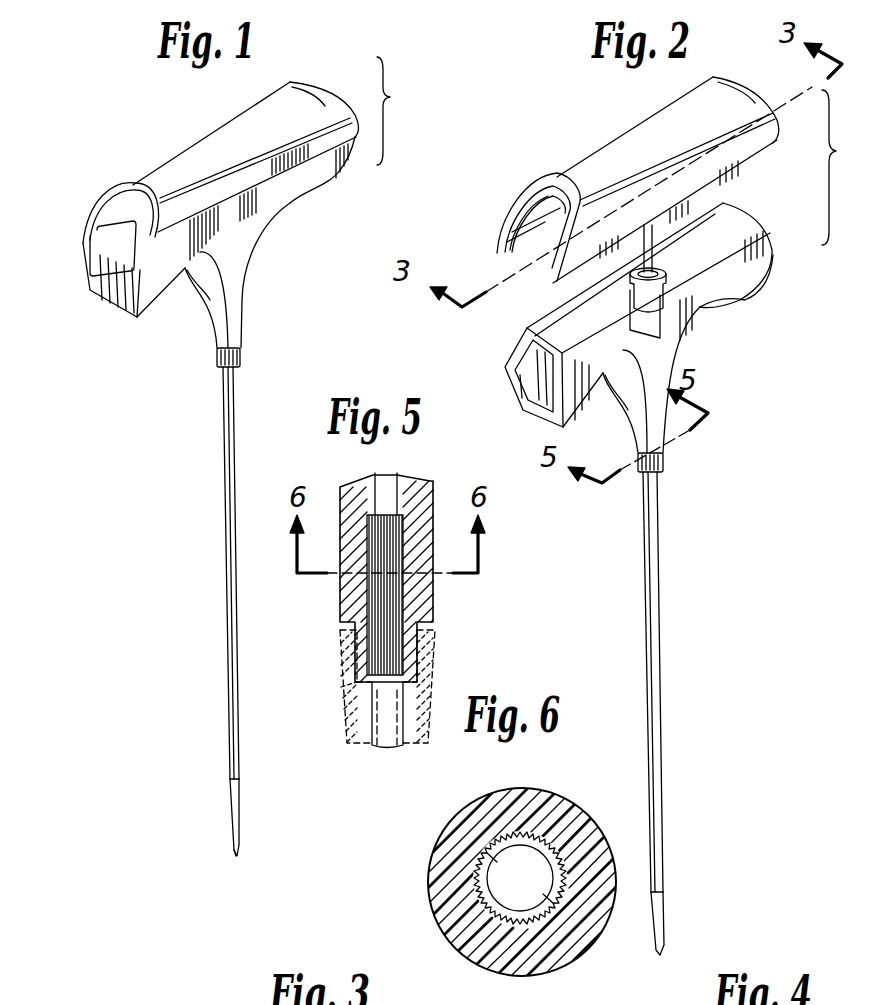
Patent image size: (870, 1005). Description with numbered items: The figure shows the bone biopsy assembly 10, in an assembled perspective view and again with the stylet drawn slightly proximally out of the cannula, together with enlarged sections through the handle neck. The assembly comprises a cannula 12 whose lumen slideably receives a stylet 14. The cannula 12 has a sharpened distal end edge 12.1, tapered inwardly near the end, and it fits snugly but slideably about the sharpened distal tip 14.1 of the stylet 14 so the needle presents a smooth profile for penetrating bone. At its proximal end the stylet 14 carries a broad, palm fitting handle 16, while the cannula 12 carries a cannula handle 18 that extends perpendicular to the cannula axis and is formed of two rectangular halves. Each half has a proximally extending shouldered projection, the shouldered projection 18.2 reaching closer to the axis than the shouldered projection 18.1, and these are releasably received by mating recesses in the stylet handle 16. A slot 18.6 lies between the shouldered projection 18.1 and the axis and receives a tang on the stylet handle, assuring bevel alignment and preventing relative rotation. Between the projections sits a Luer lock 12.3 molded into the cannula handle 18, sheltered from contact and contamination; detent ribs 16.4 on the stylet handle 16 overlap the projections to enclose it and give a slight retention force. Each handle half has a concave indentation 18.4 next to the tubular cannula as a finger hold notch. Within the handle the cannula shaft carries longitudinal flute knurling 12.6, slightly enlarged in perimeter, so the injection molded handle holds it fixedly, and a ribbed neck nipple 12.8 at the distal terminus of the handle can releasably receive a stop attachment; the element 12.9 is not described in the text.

In FIG. 1, the bone biopsy assembly 10 is at (395, 111).
In FIG. 2, the bone biopsy assembly 10 is at (839, 167).
In FIG. 1, the cannula 12 is at (210, 627).
In FIG. 2, the cannula 12 is at (731, 704).
In FIG. 1, the sharpened distal end edge 12.1 is at (240, 836).
In FIG. 2, the sharpened distal end edge 12.1 is at (648, 937).
In FIG. 2, the Luer lock 12.3 is at (630, 272).
In FIG. 5, the longitudinal flute knurling 12.6 is at (397, 602).
In FIG. 6, the longitudinal flute knurling 12.6 is at (477, 873).
In FIG. 1, the neck nipple 12.8 is at (216, 360).
In FIG. 2, the neck nipple 12.8 is at (665, 458).
In FIG. 5, the neck nipple 12.8 is at (362, 677).
In FIG. 5, the needle bore 12.9 is at (345, 733).
In FIG. 1, the stylet 14 is at (110, 182).
In FIG. 2, the stylet 14 is at (516, 195).
In FIG. 1, the sharpened distal tip 14.1 is at (232, 850).
In FIG. 1, the stylet handle 16 is at (190, 143).
In FIG. 2, the stylet handle 16 is at (585, 160).
In FIG. 1, the detent ribs 16.4 is at (98, 255).
In FIG. 2, the detent ribs 16.4 is at (503, 242).
In FIG. 1, the cannula handle 18 is at (105, 302).
In FIG. 2, the cannula handle 18 is at (618, 313).
In FIG. 5, the cannula handle 18 is at (430, 487).
In FIG. 6, the cannula handle 18 is at (453, 820).
In FIG. 2, the shouldered projection 18.1 is at (733, 220).
In FIG. 2, the shouldered projection 18.2 is at (622, 289).
In FIG. 1, the concave indentation 18.4 is at (182, 280).
In FIG. 2, the concave indentation 18.4 is at (610, 383).
In FIG. 2, the slot 18.6 is at (690, 300).